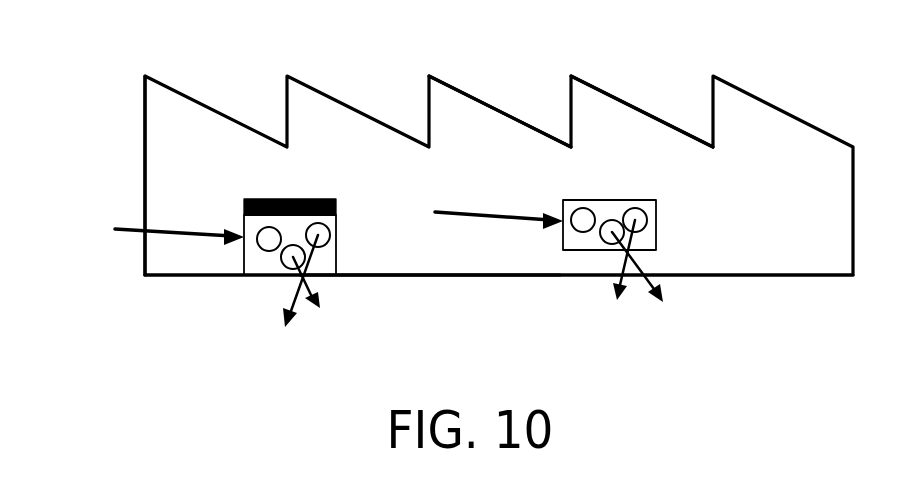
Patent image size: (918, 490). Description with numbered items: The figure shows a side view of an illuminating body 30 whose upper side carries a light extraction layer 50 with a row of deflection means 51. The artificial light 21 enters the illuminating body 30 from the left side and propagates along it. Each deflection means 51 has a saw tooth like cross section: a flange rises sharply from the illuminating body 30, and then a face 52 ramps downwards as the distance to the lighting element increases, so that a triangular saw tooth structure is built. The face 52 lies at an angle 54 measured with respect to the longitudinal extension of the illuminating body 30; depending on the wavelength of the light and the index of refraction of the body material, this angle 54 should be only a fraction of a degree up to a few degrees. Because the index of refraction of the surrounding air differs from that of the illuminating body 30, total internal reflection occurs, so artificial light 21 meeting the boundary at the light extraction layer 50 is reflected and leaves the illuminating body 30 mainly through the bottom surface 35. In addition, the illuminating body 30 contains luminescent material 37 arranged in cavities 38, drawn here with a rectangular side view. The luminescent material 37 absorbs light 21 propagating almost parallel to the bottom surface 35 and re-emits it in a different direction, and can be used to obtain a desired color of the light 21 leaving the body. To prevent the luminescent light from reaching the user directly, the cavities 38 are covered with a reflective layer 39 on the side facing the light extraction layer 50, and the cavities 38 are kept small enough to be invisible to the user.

The light extraction layer 50 is at (670, 90).
The deflection means 51 is at (597, 108).
The face 52 is at (502, 108).
The angle 54 is at (110, 182).
The illuminating body 30 is at (488, 258).
The bottom surface 35 is at (405, 275).
The luminescent material 37 is at (269, 239).
The cavities 38 is at (328, 265).
The reflective layer 39 is at (264, 198).
The artificial light 21 is at (130, 235).